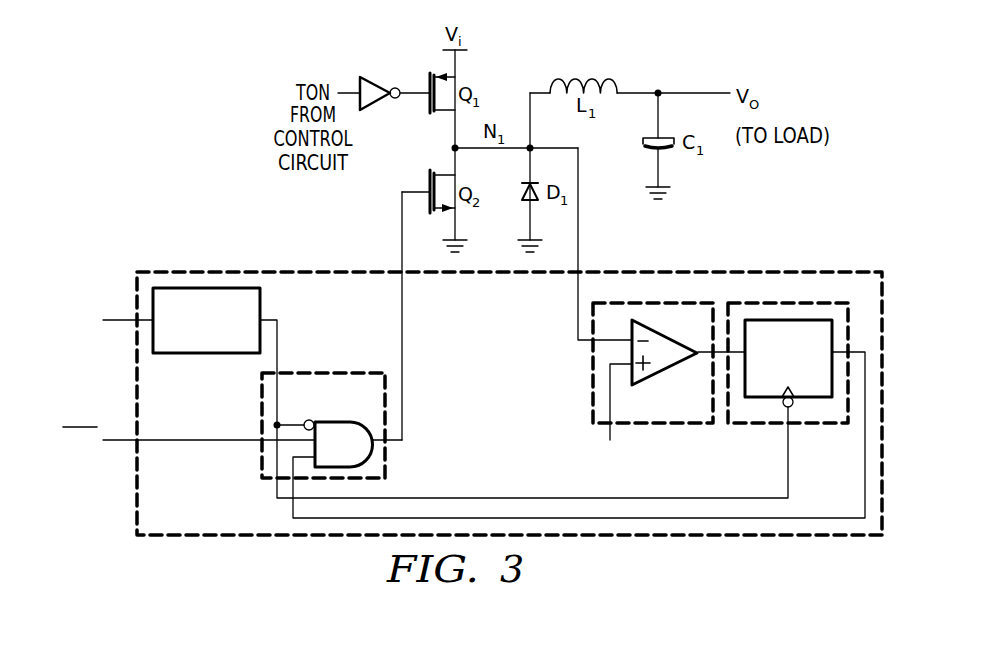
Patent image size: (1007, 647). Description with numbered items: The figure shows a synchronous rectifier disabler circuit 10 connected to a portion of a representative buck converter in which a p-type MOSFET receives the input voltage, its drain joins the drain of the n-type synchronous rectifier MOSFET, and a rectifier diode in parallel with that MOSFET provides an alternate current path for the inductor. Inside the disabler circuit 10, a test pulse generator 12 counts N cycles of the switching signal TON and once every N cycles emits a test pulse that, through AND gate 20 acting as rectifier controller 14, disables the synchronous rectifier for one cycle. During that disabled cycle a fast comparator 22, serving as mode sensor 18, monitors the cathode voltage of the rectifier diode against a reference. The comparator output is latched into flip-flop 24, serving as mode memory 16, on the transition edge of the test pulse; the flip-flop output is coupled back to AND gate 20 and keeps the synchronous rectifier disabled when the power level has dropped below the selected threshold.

The synchronous rectifier disabler circuit 10 is at (503, 421).
The test pulse generator 12 is at (182, 355).
The rectifier controller 14 is at (262, 412).
The mode memory 16 is at (754, 424).
The mode sensor 18 is at (664, 424).
The AND gate 20 is at (336, 422).
The fast comparator 22 is at (665, 373).
The flip-flop 24 is at (802, 364).